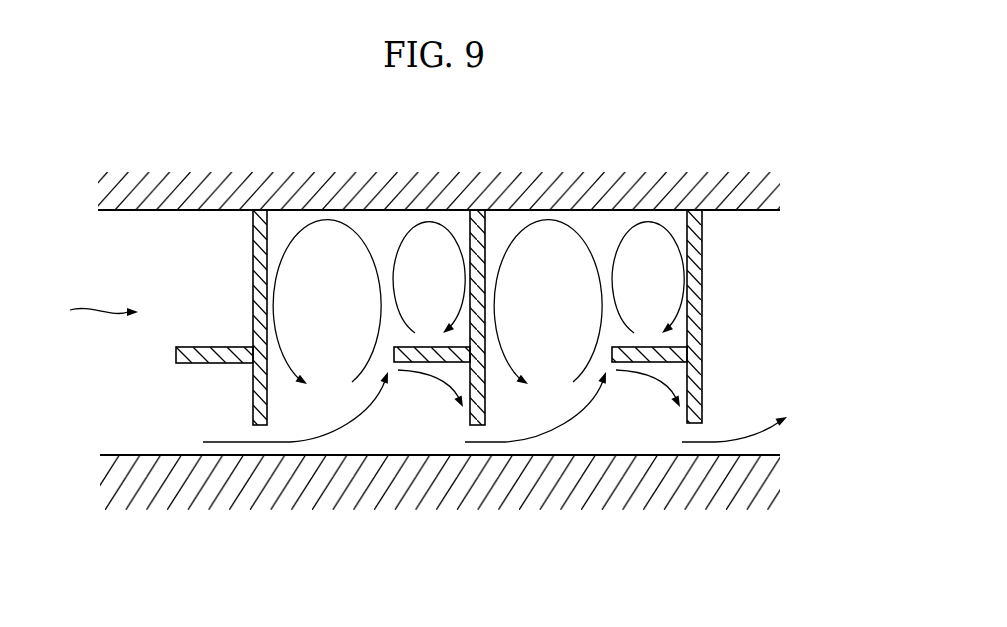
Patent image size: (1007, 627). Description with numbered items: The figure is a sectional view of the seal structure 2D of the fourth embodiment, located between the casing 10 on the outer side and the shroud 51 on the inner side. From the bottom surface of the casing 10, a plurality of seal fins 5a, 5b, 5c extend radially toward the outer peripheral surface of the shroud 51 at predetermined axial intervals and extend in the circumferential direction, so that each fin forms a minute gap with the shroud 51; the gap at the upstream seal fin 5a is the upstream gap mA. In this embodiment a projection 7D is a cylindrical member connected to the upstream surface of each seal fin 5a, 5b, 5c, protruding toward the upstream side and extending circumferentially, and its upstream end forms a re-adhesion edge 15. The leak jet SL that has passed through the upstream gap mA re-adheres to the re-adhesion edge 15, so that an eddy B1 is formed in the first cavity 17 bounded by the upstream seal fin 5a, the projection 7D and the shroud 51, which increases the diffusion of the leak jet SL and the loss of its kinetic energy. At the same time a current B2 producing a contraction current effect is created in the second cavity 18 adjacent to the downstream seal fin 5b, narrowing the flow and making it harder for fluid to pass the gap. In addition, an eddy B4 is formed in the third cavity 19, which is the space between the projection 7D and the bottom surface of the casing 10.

The casing 10 is at (127, 208).
The shroud 51 is at (117, 463).
The upstream seal fin 5a is at (262, 232).
The downstream seal fin 5b is at (478, 232).
The seal fin 5c is at (697, 268).
The projection 7D is at (205, 345).
The third cavity 19 is at (225, 235).
The first cavity 17 is at (352, 240).
The re-adhesion edge 15 is at (175, 363).
The second cavity 18 is at (437, 405).
The upstream gap mA is at (252, 450).
The leak jet SL is at (298, 442).
The eddy B1 is at (278, 262).
The eddy B4 is at (392, 260).
The current B2 is at (466, 388).
The seal structure 2D is at (90, 310).